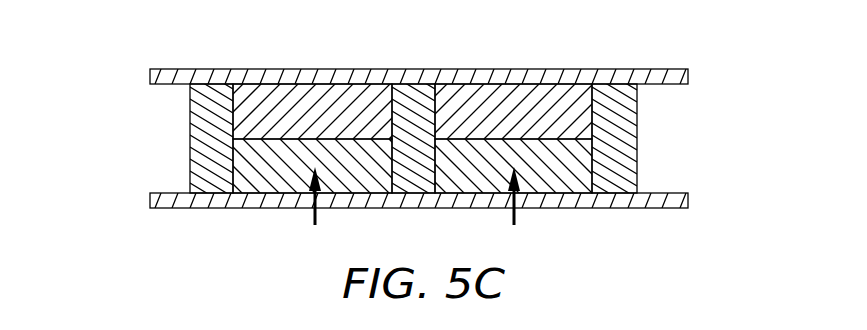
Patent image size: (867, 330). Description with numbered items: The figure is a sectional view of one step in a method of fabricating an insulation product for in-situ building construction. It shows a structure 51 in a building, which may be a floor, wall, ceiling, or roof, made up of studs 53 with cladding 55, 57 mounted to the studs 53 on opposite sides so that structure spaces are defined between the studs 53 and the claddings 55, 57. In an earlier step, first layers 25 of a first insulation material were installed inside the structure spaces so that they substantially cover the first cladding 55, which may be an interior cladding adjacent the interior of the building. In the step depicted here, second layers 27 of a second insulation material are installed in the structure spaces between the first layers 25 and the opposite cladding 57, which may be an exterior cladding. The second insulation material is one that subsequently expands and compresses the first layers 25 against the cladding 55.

The structure 51 is at (112, 57).
The first layers 25 is at (317, 97).
The second layers 27 is at (337, 182).
The studs 53 is at (198, 143).
The cladding 55 is at (687, 69).
The cladding 57 is at (688, 208).